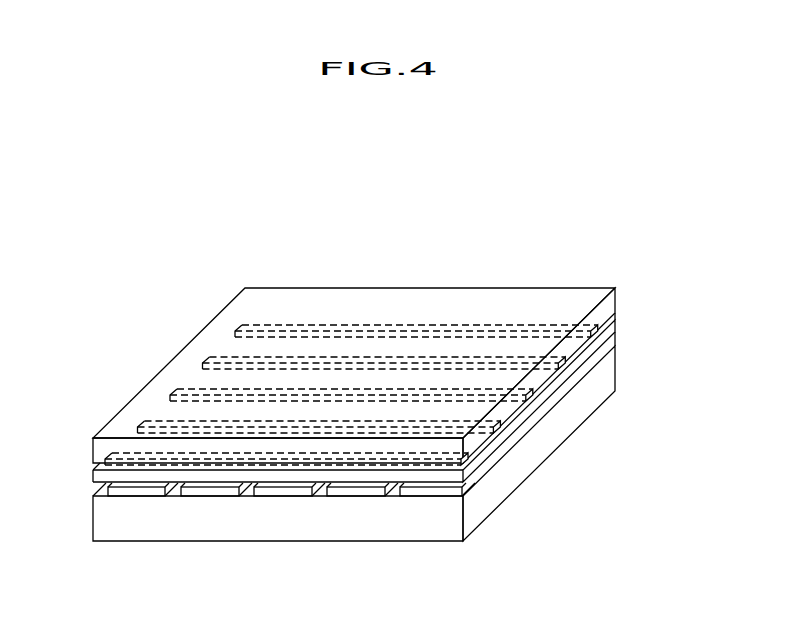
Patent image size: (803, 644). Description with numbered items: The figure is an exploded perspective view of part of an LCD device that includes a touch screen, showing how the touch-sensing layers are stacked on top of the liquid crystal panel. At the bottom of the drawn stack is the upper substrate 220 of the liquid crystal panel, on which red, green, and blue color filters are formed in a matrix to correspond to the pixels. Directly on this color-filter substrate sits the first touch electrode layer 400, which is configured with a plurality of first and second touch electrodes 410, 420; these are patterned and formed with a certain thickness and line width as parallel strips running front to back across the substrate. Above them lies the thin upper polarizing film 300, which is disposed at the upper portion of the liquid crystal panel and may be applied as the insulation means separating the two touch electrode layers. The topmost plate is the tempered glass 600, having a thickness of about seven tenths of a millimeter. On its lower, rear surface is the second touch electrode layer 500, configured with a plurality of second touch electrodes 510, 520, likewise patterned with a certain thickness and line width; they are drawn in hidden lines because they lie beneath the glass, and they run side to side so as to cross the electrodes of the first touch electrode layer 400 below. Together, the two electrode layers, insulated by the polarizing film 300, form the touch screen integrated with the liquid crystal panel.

The tempered glass 600 is at (617, 302).
The upper polarizing film 300 is at (617, 327).
The upper substrate 220 is at (617, 368).
The first touch electrode layer 400 is at (291, 550).
The first touch electrode 410 is at (420, 494).
The second touch electrode 420 is at (355, 494).
The second touch electrode layer 500 is at (351, 341).
The second touch electrode 510 is at (463, 360).
The second touch electrode 520 is at (411, 326).